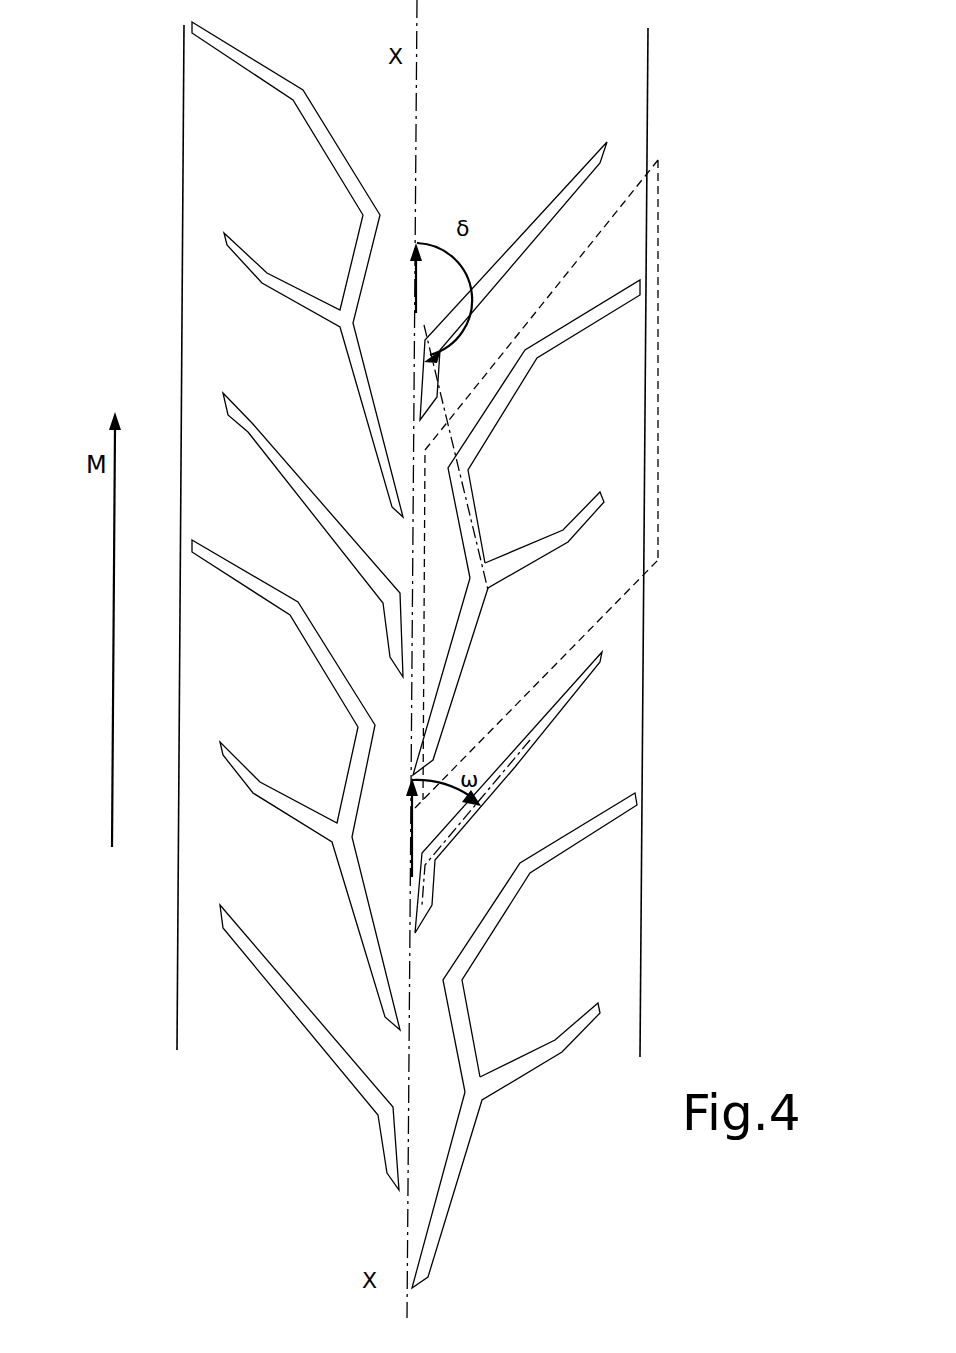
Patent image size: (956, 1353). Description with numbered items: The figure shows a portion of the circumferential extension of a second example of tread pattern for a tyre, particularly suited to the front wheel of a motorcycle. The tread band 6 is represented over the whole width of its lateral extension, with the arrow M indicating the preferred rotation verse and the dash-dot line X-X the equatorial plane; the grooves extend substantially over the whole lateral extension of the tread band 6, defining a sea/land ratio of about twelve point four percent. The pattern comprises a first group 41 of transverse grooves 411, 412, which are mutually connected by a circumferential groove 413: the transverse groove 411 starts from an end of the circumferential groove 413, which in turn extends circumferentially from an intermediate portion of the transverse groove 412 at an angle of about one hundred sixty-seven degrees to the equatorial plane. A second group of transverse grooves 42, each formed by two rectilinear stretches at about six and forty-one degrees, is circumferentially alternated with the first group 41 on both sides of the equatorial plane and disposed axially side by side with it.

The tread band 6 is at (700, 130).
The first group of transverse grooves 41 is at (632, 264).
The transverse groove 411 is at (513, 383).
The transverse groove 412 is at (510, 568).
The circumferential groove 413 is at (463, 520).
The second group of transverse grooves 42 is at (517, 768).